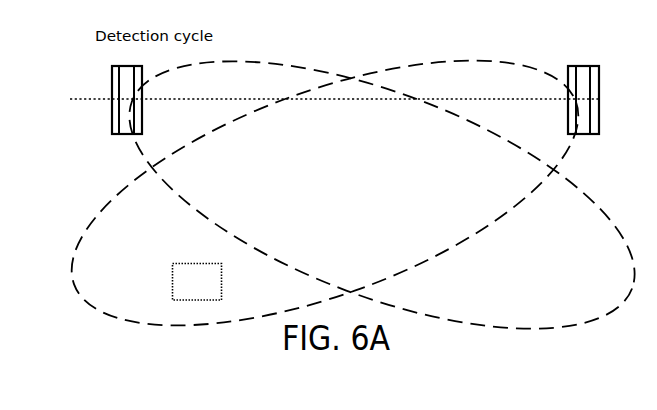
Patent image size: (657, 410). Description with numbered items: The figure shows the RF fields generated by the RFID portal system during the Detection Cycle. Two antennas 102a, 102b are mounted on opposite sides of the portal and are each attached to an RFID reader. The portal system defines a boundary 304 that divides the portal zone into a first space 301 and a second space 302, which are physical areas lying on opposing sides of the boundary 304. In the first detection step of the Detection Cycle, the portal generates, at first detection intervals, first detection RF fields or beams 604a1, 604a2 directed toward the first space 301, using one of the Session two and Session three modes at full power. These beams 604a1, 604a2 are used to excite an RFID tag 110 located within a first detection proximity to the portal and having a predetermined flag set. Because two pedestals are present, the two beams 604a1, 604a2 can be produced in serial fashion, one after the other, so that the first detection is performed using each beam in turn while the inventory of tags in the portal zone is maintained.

The antenna 102a is at (125, 118).
The antenna 102b is at (580, 122).
The first space 301 is at (364, 190).
The second space 302 is at (365, 68).
The boundary 304 is at (102, 98).
The RFID tag 110 is at (213, 290).
The first detection beam 604a1 is at (325, 193).
The first detection beam 604a2 is at (597, 318).